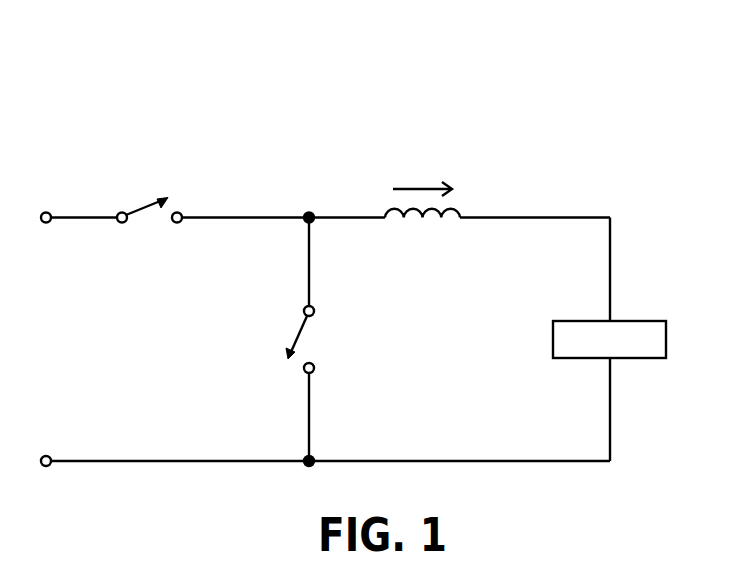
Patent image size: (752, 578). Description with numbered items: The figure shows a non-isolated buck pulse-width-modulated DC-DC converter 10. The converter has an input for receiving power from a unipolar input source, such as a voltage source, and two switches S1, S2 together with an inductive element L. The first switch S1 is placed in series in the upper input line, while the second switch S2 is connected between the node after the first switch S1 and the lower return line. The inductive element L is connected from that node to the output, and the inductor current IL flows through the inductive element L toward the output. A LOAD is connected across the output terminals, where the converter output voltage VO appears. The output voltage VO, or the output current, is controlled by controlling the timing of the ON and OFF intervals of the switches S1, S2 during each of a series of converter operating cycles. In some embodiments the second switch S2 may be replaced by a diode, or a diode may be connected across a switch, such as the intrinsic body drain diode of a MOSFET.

The non-isolated buck PWM DC-DC converter 10 is at (375, 299).
The switch S1 is at (148, 200).
The switch S2 is at (316, 339).
The inductive element L is at (422, 231).
The inductor current IL is at (422, 177).
The load LOAD is at (609, 339).
The converter output voltage VO is at (689, 336).